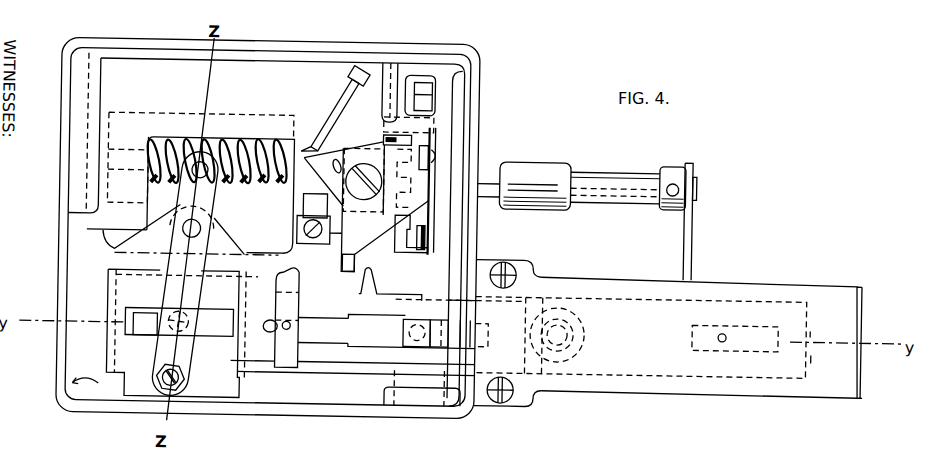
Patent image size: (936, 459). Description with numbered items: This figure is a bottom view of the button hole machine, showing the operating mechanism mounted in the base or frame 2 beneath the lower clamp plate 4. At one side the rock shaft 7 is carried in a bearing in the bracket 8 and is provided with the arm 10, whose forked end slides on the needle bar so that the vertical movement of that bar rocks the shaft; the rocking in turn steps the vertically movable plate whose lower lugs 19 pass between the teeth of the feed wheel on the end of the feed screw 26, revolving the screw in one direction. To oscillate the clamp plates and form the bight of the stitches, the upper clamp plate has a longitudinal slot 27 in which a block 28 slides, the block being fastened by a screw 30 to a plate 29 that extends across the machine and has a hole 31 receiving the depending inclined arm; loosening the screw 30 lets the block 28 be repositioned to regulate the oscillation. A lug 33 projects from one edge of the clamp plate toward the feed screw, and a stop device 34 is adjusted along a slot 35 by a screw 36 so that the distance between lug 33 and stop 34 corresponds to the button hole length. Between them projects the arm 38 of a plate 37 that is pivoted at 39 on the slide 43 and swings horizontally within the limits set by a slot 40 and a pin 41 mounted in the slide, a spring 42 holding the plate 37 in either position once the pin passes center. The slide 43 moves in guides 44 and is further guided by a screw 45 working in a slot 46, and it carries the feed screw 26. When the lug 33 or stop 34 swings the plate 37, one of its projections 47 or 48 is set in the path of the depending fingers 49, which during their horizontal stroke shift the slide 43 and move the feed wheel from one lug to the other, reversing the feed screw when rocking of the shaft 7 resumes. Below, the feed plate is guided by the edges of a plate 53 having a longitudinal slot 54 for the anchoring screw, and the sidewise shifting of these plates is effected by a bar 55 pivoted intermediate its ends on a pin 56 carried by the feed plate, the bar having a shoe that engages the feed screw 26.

The base or frame 2 is at (63, 248).
The lower clamp plate 4 is at (758, 281).
The rock shaft 7 is at (606, 177).
The bracket 8 is at (539, 168).
The arm 10 is at (688, 228).
The lugs 19 is at (400, 240).
The feed screw 26 is at (251, 188).
The longitudinal slot 27 is at (366, 327).
The block 28 is at (423, 337).
The plate 29 is at (440, 130).
The screw 30 is at (413, 326).
The hole 31 is at (430, 92).
The lug 33 is at (370, 283).
The stop device 34 is at (296, 284).
The slot 35 is at (315, 327).
The screw 36 is at (292, 322).
The plate 37 is at (385, 210).
The arm 38 is at (355, 260).
The pivot 39 is at (363, 180).
The slot 40 is at (343, 174).
The pin 41 is at (342, 142).
The spring 42 is at (334, 109).
The slide 43 is at (191, 166).
The guides 44 is at (86, 131).
The screw 45 is at (300, 237).
The slot 46 is at (317, 202).
The projection 47 is at (420, 203).
The projection 48 is at (405, 146).
The fingers 49 is at (427, 155).
The plate 53 is at (182, 333).
The longitudinal slot 54 is at (179, 321).
The bar 55 is at (174, 271).
The pin 56 is at (182, 233).